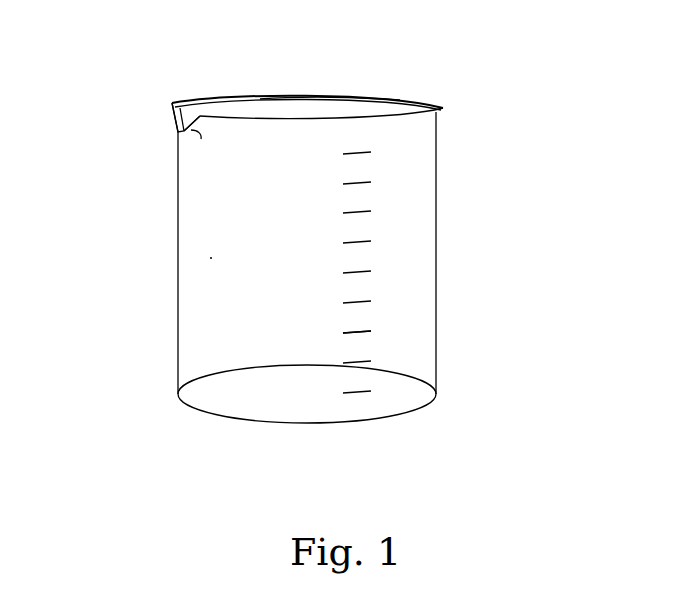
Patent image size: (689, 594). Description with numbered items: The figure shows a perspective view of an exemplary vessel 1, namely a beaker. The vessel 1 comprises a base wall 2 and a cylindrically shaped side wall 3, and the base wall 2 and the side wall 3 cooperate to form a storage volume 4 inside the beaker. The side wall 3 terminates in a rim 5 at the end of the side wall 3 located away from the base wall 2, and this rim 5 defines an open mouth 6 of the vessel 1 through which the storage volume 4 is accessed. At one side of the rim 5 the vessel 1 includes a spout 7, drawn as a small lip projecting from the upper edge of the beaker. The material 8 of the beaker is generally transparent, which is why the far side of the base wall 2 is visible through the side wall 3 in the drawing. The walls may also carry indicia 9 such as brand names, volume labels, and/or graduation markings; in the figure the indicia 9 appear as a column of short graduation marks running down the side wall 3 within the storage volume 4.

The vessel 1 is at (298, 272).
The base wall 2 is at (354, 429).
The side wall 3 is at (437, 272).
The storage volume 4 is at (412, 230).
The rim 5 is at (368, 95).
The open mouth 6 is at (300, 102).
The spout 7 is at (178, 131).
The material 8 is at (210, 258).
The indicia 9 is at (360, 332).